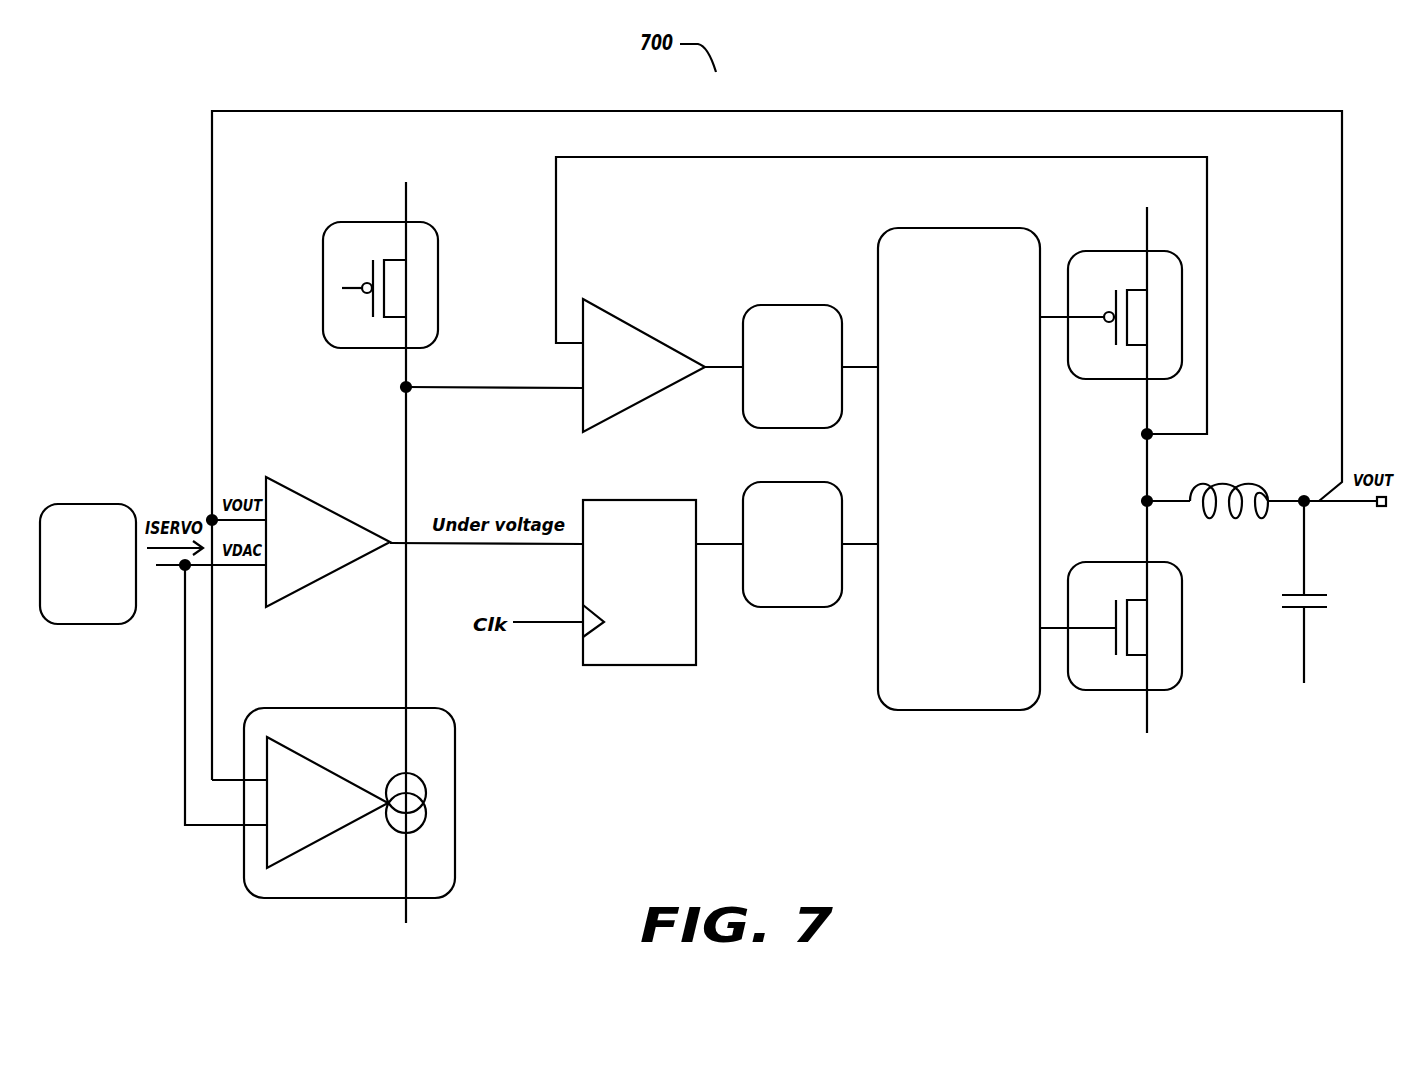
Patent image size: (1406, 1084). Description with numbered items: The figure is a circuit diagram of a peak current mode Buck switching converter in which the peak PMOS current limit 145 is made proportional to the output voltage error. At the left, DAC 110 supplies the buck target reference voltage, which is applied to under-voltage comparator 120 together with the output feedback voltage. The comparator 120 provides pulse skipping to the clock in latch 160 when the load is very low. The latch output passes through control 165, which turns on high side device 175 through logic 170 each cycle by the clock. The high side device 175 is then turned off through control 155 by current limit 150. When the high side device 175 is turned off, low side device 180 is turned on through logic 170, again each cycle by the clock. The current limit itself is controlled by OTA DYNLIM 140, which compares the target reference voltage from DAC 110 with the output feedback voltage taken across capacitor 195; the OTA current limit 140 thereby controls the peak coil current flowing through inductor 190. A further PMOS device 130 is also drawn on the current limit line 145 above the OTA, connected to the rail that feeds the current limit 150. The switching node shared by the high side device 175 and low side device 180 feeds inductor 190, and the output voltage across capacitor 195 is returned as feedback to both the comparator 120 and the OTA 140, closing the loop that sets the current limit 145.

The DAC 110 is at (97, 504).
The under-voltage comparator 120 is at (298, 492).
The PMOS transistor 130 is at (385, 221).
The OTA DYNLIM 140 is at (318, 707).
The peak PMOS current limit 145 is at (406, 677).
The current limit 150 is at (622, 320).
The control 155 is at (808, 304).
The latch 160 is at (641, 499).
The control 165 is at (808, 481).
The logic 170 is at (942, 227).
The high side device 175 is at (1127, 250).
The low side device 180 is at (1127, 561).
The inductor 190 is at (1218, 477).
The capacitor 195 is at (1313, 588).